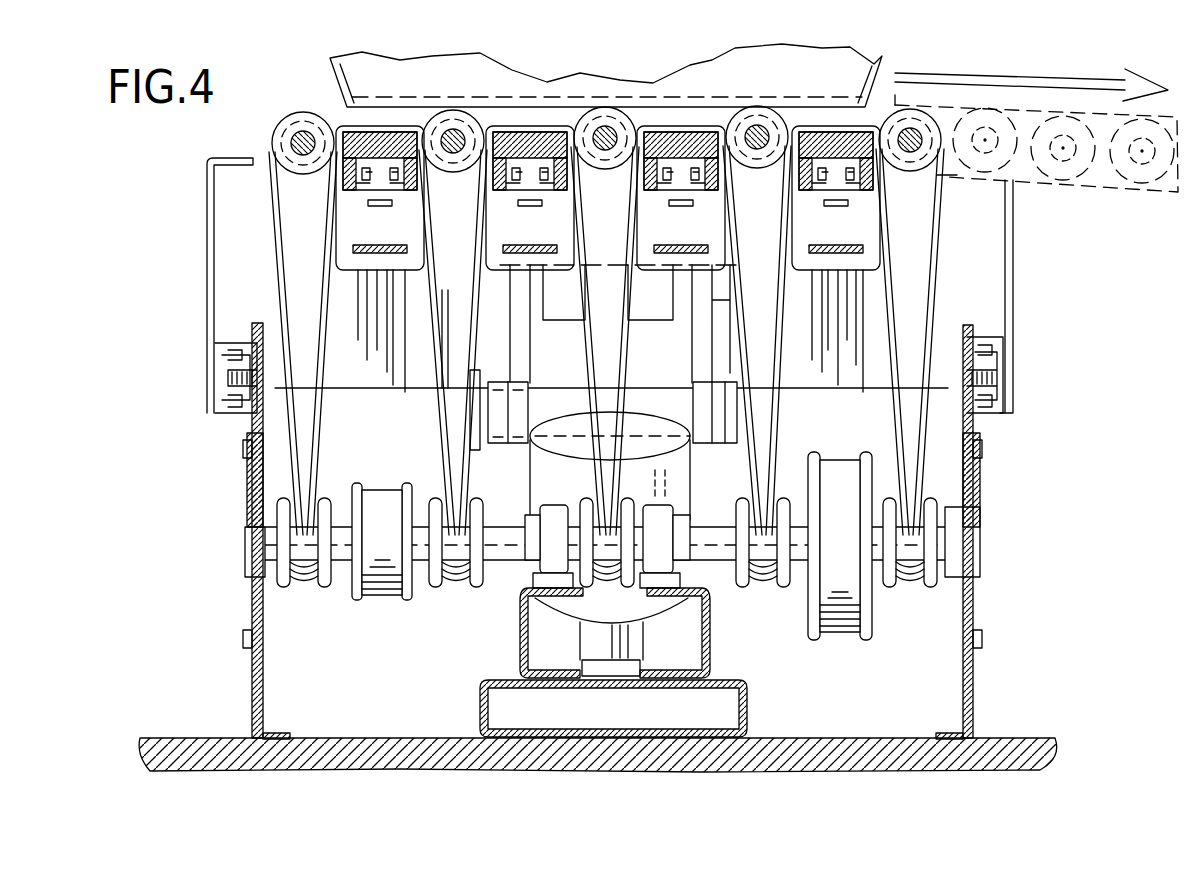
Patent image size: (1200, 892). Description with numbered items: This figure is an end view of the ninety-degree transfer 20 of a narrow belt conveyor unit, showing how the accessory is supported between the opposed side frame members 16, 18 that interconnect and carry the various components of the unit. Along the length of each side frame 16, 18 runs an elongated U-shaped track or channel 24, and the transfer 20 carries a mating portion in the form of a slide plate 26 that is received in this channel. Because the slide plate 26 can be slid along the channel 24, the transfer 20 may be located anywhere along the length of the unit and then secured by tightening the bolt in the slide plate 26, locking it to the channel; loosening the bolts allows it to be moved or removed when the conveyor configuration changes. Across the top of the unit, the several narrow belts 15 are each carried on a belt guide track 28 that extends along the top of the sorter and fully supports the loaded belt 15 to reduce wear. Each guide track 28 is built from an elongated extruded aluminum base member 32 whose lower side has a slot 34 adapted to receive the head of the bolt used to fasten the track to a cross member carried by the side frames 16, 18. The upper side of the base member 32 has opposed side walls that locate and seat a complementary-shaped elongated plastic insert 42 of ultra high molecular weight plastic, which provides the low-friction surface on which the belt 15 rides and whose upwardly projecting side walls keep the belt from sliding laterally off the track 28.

The belt 15 is at (363, 262).
The side frame member 16 is at (207, 293).
The side frame member 18 is at (1013, 292).
The 90° transfer 20 is at (240, 490).
The U-shaped track or channel 24 is at (238, 343).
The slide plate 26 is at (232, 412).
The belt guide track 28 is at (346, 118).
The base member 32 is at (406, 190).
The slot 34 is at (377, 191).
The plastic insert 42 is at (380, 134).